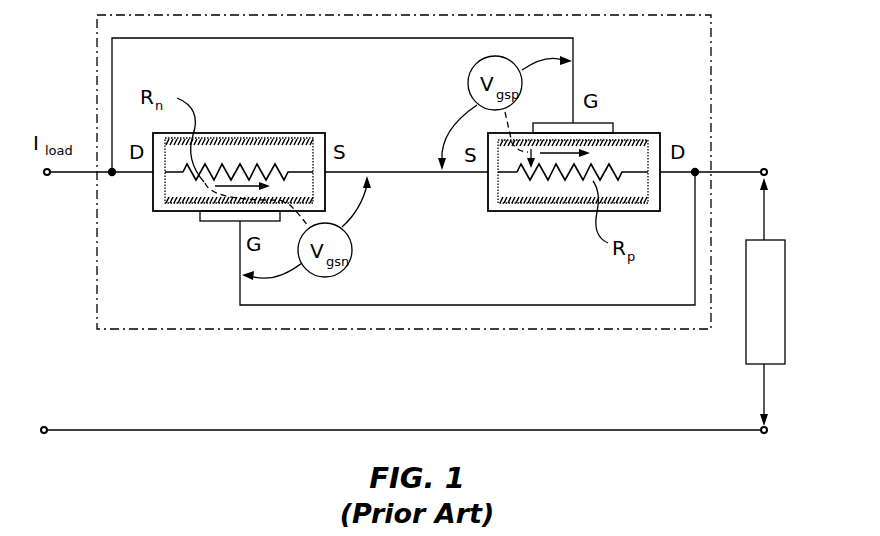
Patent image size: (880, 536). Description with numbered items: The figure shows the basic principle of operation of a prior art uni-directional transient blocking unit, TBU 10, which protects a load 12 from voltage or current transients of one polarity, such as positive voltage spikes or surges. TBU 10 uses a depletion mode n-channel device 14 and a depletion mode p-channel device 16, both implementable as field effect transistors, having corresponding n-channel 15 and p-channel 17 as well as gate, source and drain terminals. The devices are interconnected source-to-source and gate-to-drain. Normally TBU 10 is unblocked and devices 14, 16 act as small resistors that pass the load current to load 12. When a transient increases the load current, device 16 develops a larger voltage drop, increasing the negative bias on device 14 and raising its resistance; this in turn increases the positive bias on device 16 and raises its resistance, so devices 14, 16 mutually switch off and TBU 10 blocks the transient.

The transient blocking unit 10 is at (711, 95).
The load 12 is at (746, 351).
The depletion mode n-channel device 14 is at (236, 176).
The n-channel 15 is at (258, 139).
The depletion mode p-channel device 16 is at (574, 178).
The p-channel 17 is at (517, 205).